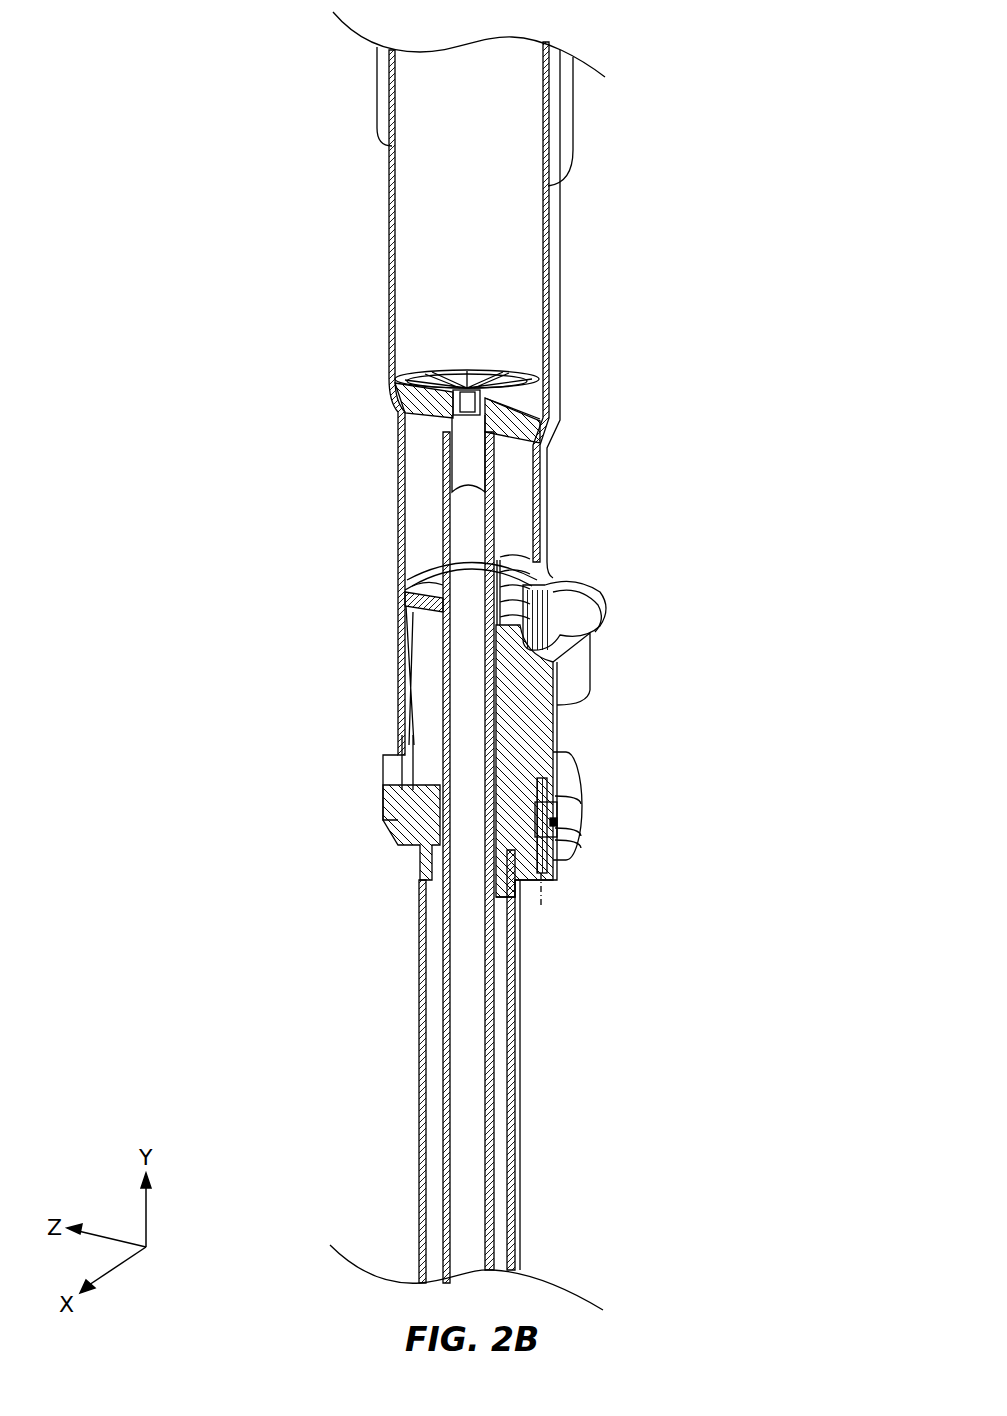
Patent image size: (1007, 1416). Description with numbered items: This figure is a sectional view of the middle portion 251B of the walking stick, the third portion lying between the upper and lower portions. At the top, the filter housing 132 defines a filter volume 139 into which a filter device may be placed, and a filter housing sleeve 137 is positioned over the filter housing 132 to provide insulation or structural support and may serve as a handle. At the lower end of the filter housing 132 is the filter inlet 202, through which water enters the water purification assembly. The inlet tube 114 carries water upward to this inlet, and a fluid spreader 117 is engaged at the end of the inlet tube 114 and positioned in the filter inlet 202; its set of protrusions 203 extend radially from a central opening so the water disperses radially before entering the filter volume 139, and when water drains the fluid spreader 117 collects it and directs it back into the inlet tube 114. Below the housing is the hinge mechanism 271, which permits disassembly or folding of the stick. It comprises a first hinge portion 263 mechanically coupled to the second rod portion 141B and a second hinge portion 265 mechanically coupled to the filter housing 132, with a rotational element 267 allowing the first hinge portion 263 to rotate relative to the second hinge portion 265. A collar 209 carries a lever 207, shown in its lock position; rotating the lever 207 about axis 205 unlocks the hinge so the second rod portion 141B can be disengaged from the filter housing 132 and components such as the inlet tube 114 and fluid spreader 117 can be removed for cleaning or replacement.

The middle portion 251B is at (755, 62).
The filter housing sleeve 137 is at (567, 128).
The filter housing 132 is at (555, 291).
The filter volume 139 is at (423, 282).
The filter inlet 202 is at (390, 378).
The set of protrusions 203 is at (558, 430).
The fluid spreader 117 is at (547, 431).
The second hinge portion 265 is at (552, 583).
The rotational element 267 is at (590, 595).
The hinge mechanism 271 is at (616, 662).
The first hinge portion 263 is at (567, 683).
The lever 207 is at (575, 797).
The collar 209 is at (570, 845).
The axis 205 is at (545, 885).
The second rod portion 141B is at (527, 1030).
The inlet tube 114 is at (493, 1143).